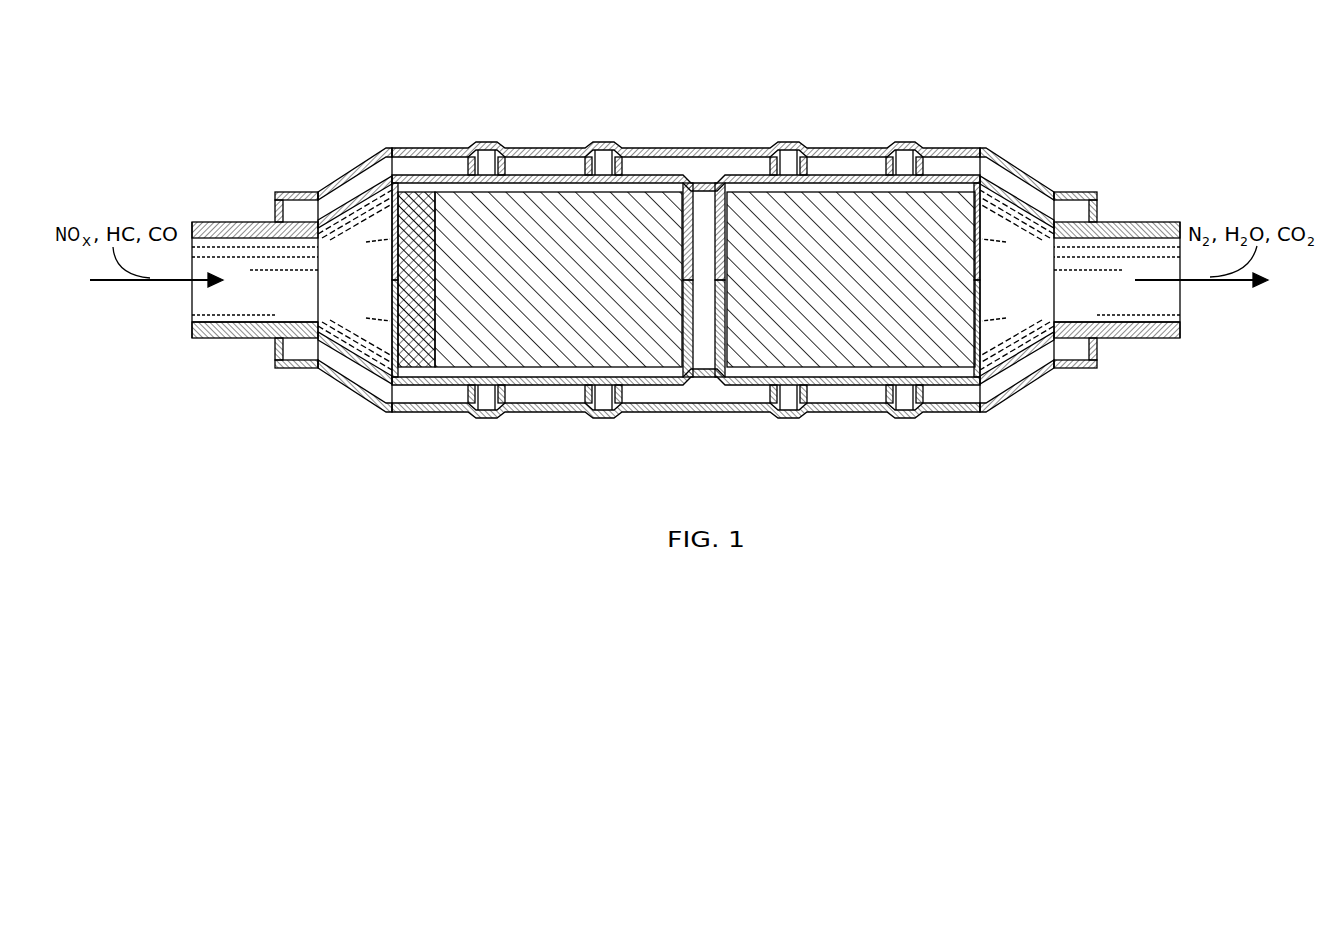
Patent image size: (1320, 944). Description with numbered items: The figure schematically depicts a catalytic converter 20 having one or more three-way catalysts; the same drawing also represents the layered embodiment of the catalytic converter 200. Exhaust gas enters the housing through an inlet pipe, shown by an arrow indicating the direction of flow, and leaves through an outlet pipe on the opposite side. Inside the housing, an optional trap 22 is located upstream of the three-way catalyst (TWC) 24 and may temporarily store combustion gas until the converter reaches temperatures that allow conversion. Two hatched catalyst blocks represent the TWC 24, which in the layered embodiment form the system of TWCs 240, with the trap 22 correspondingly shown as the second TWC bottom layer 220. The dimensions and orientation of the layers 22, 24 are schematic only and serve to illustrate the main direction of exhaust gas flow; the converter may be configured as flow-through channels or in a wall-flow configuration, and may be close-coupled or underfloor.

The catalytic converter 20 is at (686, 255).
The catalytic converter 200 is at (686, 255).
The trap 22 is at (439, 330).
The bottom layer 220 is at (404, 350).
The three-way catalyst 24 is at (705, 329).
The TWCs 240 is at (550, 345).